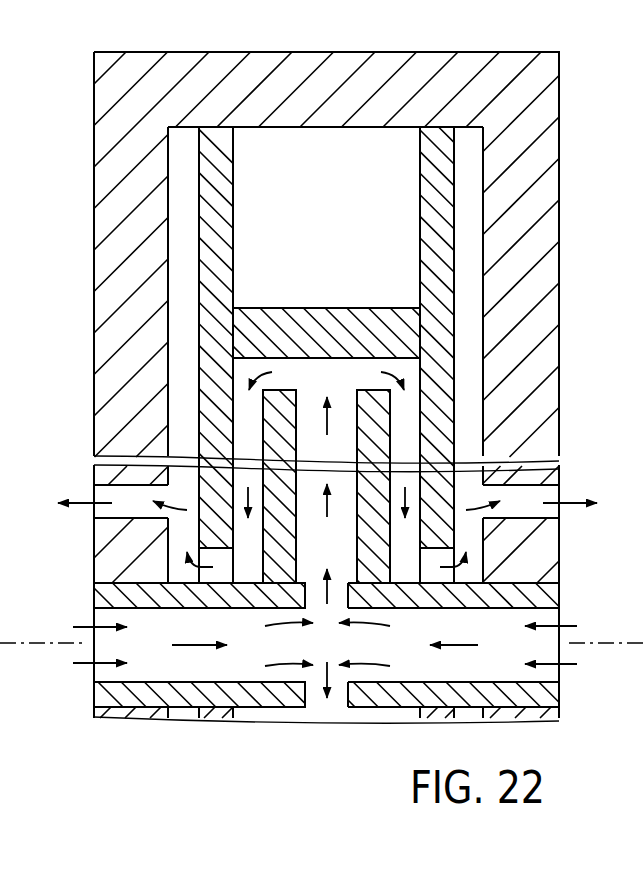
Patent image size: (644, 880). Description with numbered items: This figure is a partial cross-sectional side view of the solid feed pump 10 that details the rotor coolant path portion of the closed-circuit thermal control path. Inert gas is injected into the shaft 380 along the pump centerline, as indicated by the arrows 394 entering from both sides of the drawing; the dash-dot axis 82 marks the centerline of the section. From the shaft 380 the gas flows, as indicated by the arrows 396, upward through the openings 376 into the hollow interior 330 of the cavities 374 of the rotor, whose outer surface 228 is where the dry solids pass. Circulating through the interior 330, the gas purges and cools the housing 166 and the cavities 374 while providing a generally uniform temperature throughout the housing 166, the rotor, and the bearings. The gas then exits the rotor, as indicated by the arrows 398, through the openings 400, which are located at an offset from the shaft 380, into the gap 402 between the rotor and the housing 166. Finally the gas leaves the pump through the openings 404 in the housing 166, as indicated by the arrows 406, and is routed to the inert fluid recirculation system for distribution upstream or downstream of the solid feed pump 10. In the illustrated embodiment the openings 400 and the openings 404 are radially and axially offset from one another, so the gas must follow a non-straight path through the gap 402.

The solid feed pump 10 is at (2, 86).
The central axis 82 is at (62, 643).
The housing 166 is at (560, 137).
The outer surface 228 is at (327, 307).
The hollow interior 330 is at (348, 390).
The cavities 374 is at (312, 376).
The openings 376 is at (332, 604).
The shaft 380 is at (542, 582).
The arrows 394 is at (88, 664).
The arrows 396 is at (332, 605).
The arrows 398 is at (184, 562).
The openings 400 is at (218, 577).
The gap 402 is at (185, 412).
The openings 404 is at (112, 515).
The arrows 406 is at (90, 501).